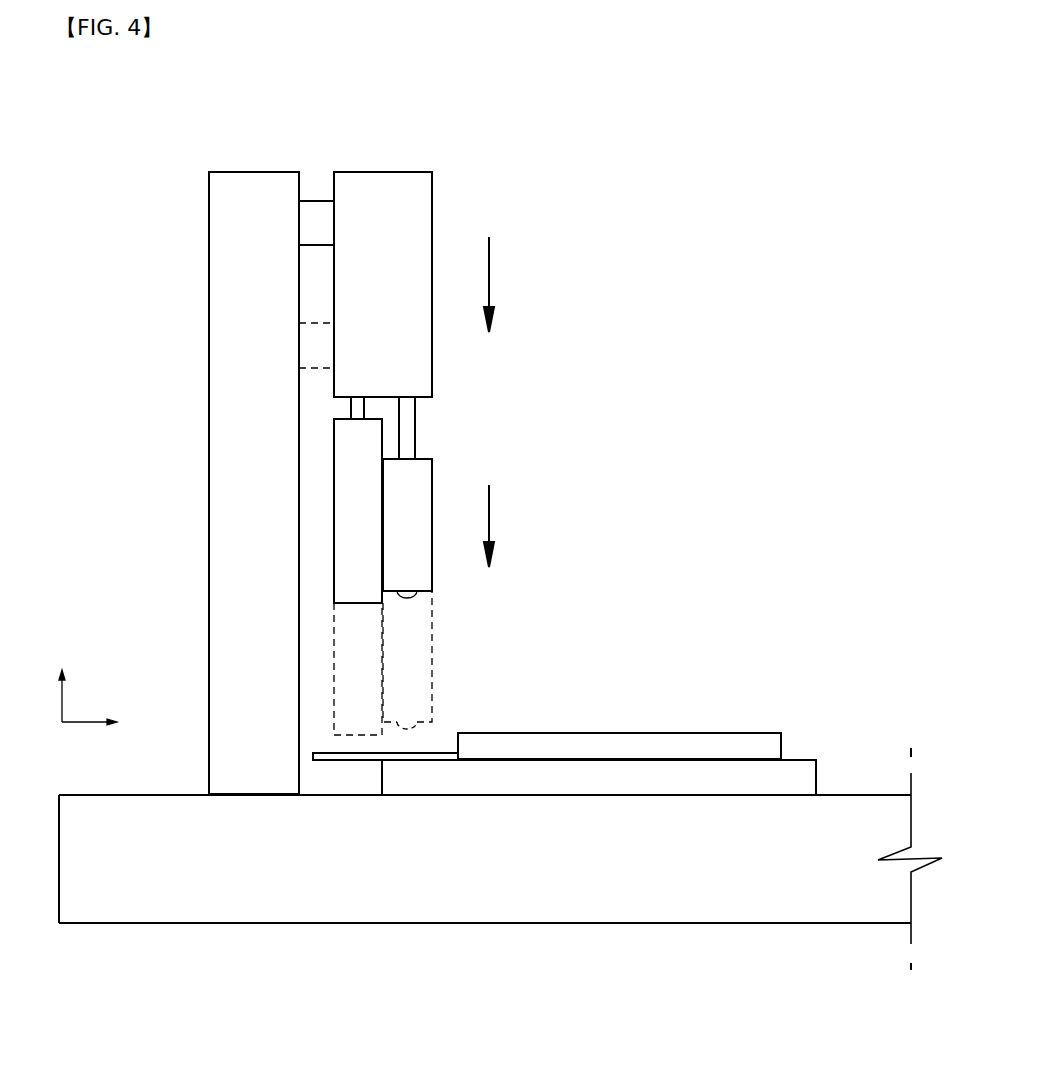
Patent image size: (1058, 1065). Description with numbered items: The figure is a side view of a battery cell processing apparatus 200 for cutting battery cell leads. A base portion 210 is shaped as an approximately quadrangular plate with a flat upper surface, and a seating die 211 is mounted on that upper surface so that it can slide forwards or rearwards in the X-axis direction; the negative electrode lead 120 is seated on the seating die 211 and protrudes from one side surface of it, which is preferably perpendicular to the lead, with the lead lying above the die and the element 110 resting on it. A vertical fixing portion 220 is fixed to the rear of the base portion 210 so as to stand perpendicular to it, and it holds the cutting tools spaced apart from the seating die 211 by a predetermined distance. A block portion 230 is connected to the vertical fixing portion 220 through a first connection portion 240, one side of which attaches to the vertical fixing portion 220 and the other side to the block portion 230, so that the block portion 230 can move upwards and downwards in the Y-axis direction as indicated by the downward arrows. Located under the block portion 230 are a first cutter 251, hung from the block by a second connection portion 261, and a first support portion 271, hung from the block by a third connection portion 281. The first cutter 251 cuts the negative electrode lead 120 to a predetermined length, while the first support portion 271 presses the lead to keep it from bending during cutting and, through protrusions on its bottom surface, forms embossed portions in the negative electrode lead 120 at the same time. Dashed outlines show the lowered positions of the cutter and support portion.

The battery cell processing apparatus 200 is at (118, 86).
The vertical fixing portion 220 is at (217, 342).
The block portion 230 is at (392, 185).
The first connection portion 240 is at (320, 203).
The first cutter 251 is at (342, 503).
The 2' connection portion 261 is at (362, 403).
The first support portion 271 is at (423, 468).
The 3' connection portion 281 is at (415, 415).
The substrate 110 is at (621, 745).
The negative electrode lead 120 is at (335, 760).
The base portion 210 is at (545, 912).
The seating die 211 is at (722, 770).